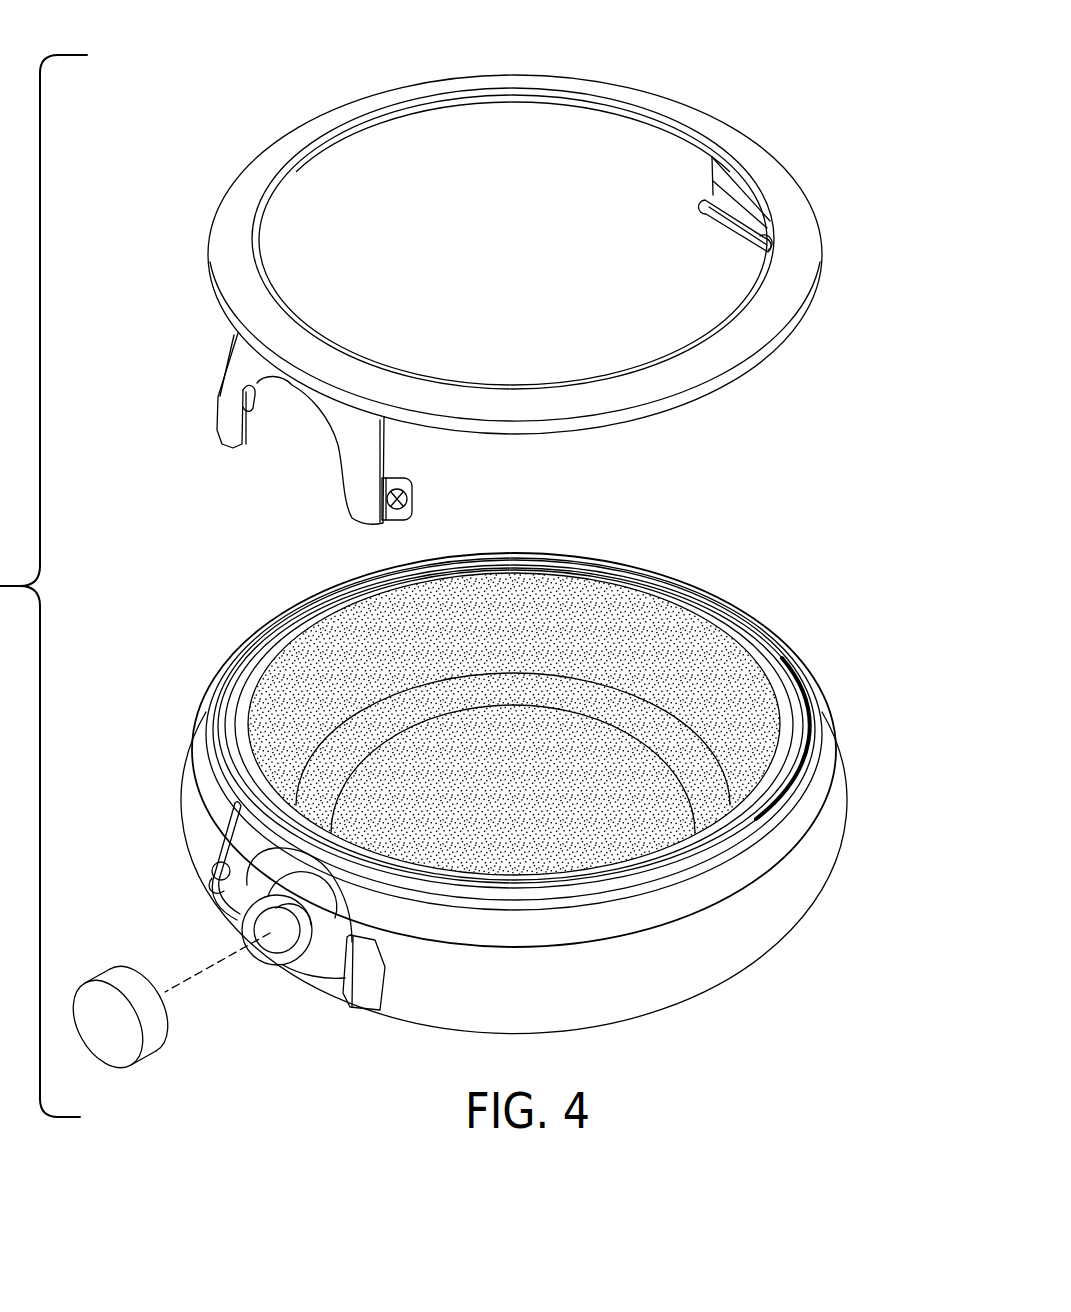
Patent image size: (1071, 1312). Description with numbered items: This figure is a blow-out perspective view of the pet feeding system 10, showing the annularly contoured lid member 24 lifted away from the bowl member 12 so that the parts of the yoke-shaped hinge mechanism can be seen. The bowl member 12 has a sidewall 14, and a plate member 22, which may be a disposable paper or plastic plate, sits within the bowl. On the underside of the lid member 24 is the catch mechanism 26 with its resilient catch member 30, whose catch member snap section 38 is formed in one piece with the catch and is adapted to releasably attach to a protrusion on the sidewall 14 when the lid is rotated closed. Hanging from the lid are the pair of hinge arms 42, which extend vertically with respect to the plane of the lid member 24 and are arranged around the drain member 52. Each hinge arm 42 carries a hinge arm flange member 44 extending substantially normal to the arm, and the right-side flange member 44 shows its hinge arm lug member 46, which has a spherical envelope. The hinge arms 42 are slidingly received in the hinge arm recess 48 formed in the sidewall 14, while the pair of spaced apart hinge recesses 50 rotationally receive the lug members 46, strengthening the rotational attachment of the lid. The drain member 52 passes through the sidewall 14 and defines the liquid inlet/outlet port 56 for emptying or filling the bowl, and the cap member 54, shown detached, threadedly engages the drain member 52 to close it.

The pet feeding system 10 is at (702, 486).
The bowl member 12 is at (708, 1003).
The sidewall 14 is at (758, 944).
The plate member 22 is at (697, 642).
The annularly contoured lid member 24 is at (672, 103).
The catch mechanism 26 is at (690, 211).
The resilient catch member 30 is at (712, 181).
The catch member snap section 38 is at (736, 234).
The hinge arms 42 is at (227, 375).
The hinge arm flange member 44 is at (258, 404).
The hinge arm lug member 46 is at (410, 518).
The hinge arm recess 48 is at (228, 836).
The hinge recesses 50 is at (214, 897).
The drain member 52 is at (317, 958).
The cap member 54 is at (152, 1050).
The liquid inlet/outlet port 56 is at (280, 950).